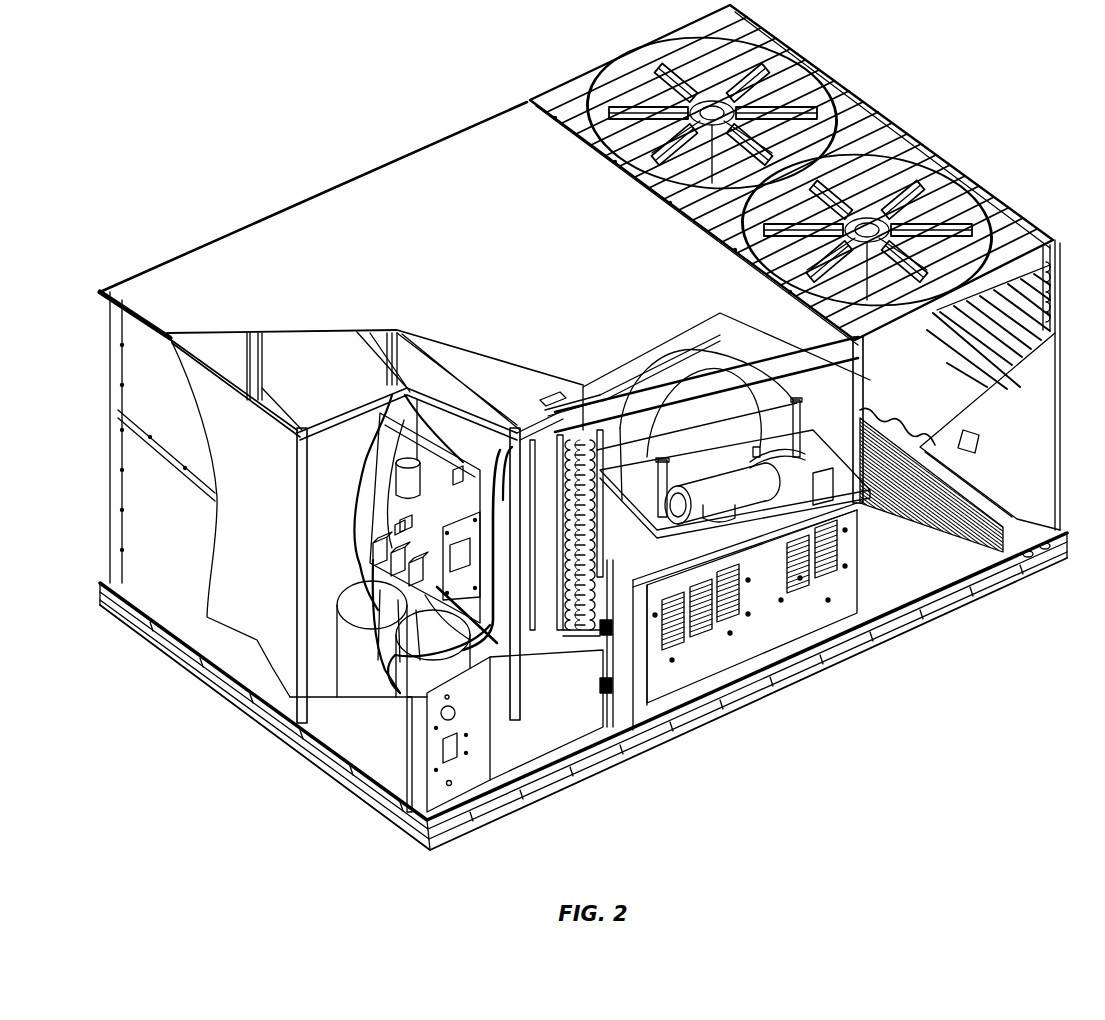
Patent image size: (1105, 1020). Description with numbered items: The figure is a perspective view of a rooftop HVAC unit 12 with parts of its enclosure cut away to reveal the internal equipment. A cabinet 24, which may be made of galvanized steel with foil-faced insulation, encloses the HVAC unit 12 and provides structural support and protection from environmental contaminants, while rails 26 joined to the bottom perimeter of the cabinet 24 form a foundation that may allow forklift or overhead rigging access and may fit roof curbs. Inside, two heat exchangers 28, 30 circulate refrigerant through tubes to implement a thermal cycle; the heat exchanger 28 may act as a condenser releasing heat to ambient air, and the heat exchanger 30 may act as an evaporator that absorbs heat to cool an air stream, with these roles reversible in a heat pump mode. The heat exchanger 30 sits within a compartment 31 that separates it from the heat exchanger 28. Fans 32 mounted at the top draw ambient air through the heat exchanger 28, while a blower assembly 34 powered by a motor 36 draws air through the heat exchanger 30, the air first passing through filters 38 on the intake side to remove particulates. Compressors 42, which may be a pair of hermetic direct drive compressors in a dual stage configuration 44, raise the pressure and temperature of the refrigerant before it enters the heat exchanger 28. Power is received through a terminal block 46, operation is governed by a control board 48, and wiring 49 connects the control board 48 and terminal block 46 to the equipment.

The HVAC unit 12 is at (306, 147).
The cabinet 24 is at (150, 543).
The rails 26 is at (173, 660).
The heat exchanger 28 is at (1058, 289).
The heat exchanger 30 is at (588, 657).
The compartment 31 is at (623, 447).
The fans 32 is at (883, 213).
The blower assembly 34 is at (727, 487).
The motor 36 is at (697, 413).
The filters 38 is at (541, 413).
The compressors 42 is at (343, 657).
The dual stage configuration 44 is at (333, 586).
The terminal block 46 is at (398, 527).
The control board 48 is at (463, 460).
The wiring 49 is at (562, 398).